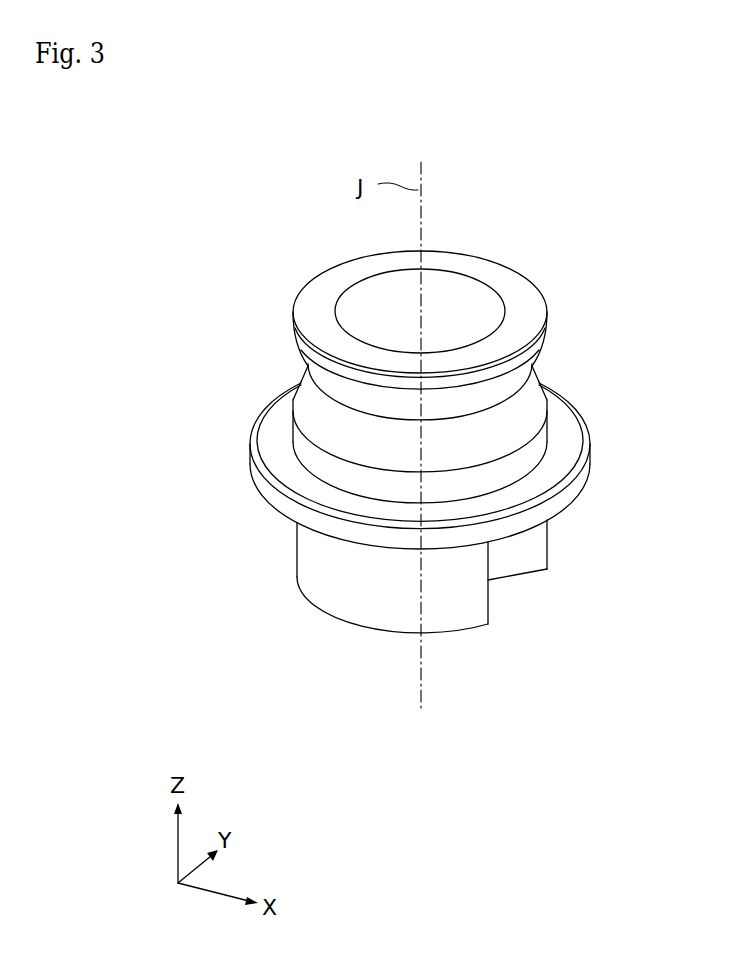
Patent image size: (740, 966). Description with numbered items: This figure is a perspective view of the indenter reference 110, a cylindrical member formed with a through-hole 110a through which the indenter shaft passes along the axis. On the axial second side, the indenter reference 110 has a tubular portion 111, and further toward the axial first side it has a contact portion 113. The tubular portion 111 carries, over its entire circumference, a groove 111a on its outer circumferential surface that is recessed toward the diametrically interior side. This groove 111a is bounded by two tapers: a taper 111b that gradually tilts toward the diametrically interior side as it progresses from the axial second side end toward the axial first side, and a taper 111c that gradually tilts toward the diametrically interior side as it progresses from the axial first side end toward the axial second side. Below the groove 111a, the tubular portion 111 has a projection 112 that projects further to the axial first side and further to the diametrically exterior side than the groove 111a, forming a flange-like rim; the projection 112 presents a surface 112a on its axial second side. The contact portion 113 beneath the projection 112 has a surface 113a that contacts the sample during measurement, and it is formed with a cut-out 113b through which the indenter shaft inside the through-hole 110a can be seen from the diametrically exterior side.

The indenter reference 110 is at (562, 163).
The through-hole 110a is at (448, 309).
The tubular portion 111 is at (545, 341).
The groove 111a is at (527, 398).
The taper 111b is at (517, 378).
The taper 111c is at (520, 417).
The projection 112 is at (576, 488).
The surface 112a is at (565, 447).
The contact portion 113 is at (467, 603).
The surface 113a is at (473, 628).
The cut-out 113b is at (535, 541).